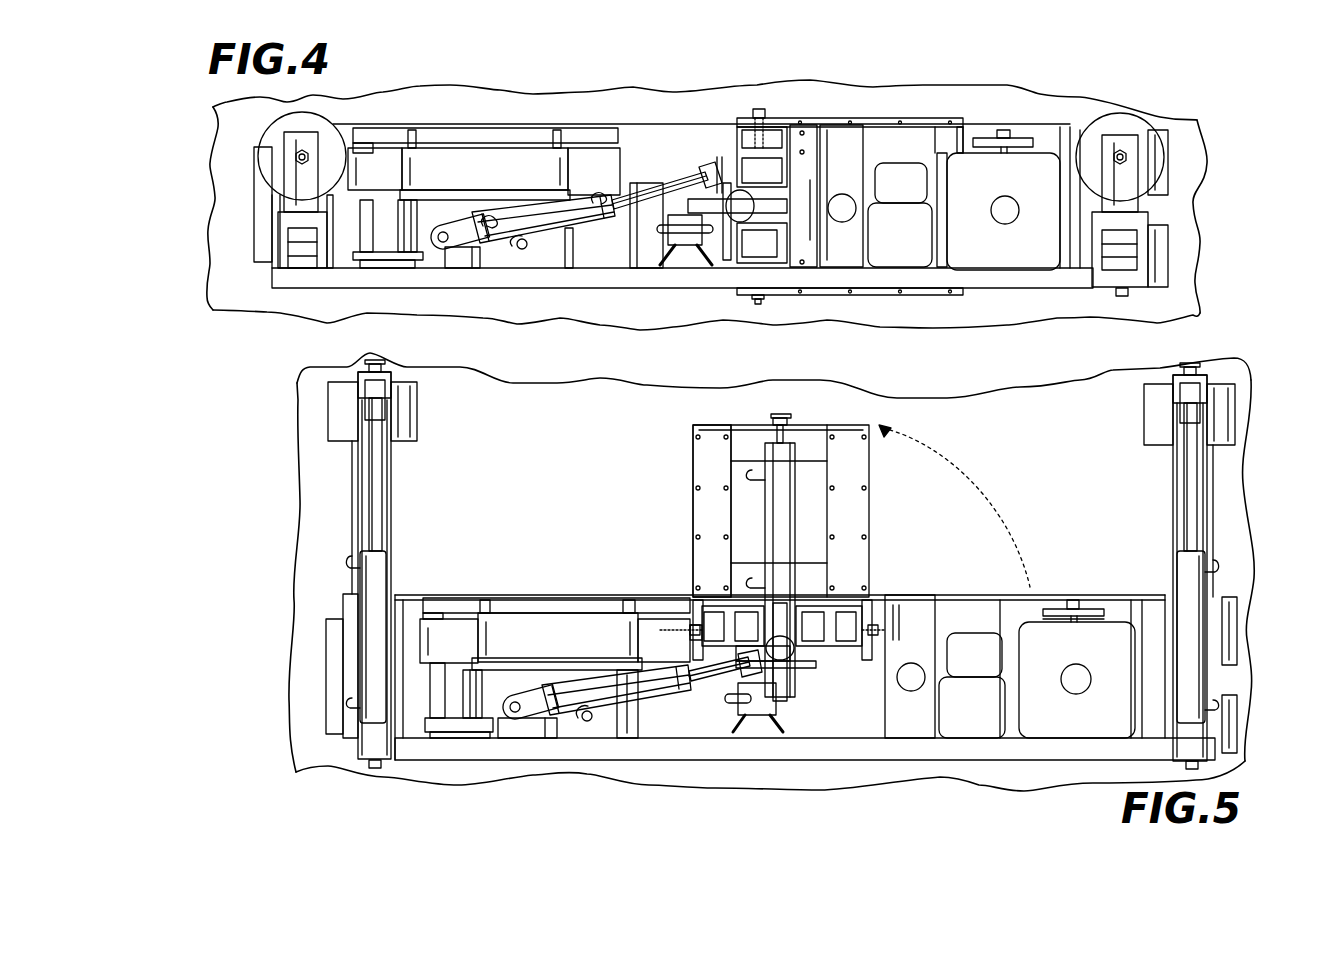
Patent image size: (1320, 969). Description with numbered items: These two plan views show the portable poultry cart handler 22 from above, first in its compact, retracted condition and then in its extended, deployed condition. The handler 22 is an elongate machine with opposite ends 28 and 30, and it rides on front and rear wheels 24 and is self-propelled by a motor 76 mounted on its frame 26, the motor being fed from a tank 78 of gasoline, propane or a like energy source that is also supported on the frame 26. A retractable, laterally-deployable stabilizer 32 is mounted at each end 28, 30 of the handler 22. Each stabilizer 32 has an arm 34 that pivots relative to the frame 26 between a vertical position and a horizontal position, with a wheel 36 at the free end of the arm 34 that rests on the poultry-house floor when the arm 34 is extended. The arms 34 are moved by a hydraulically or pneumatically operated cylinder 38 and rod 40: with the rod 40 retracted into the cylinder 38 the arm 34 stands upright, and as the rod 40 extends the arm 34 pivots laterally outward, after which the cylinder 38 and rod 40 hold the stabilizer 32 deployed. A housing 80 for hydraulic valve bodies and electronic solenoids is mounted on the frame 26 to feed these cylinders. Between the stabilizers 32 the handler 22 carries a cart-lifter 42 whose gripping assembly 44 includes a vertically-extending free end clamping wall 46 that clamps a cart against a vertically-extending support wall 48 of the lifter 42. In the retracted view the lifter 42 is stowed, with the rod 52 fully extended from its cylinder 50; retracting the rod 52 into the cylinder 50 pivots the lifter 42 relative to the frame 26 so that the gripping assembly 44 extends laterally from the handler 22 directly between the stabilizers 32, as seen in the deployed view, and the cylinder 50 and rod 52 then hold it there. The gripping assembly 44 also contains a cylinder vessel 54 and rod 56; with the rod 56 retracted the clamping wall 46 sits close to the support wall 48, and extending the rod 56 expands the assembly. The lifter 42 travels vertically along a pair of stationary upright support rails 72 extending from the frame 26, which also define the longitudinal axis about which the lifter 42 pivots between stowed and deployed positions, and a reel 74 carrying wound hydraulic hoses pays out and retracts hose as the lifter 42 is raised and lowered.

In FIG. 4, the handler 22 is at (1197, 98).
In FIG. 5, the handler 22 is at (247, 417).
In FIG. 4, the front and rear wheels 24 is at (1168, 145).
In FIG. 5, the front and rear wheels 24 is at (1237, 617).
In FIG. 5, the frame 26 is at (612, 752).
In FIG. 4, the end 28 is at (254, 262).
In FIG. 5, the end 28 is at (326, 718).
In FIG. 4, the end 30 is at (1168, 210).
In FIG. 5, the end 30 is at (1240, 690).
In FIG. 4, the stabilizer 32 is at (322, 126).
In FIG. 5, the stabilizer 32 is at (358, 477).
In FIG. 5, the arm 34 is at (358, 504).
In FIG. 4, the wheel 36 is at (268, 145).
In FIG. 5, the wheel 36 is at (328, 412).
In FIG. 5, the cylinder 38 is at (363, 585).
In FIG. 5, the rod 40 is at (370, 528).
In FIG. 5, the cart-lifter 42 is at (866, 603).
In FIG. 4, the gripping assembly 44 is at (912, 122).
In FIG. 5, the gripping assembly 44 is at (869, 527).
In FIG. 4, the free end clamping wall 46 is at (965, 132).
In FIG. 5, the free end clamping wall 46 is at (711, 430).
In FIG. 4, the support wall 48 is at (792, 142).
In FIG. 5, the support wall 48 is at (713, 594).
In FIG. 4, the cylinder 50 is at (556, 243).
In FIG. 5, the cylinder 50 is at (565, 715).
In FIG. 4, the rod 52 is at (657, 172).
In FIG. 5, the rod 52 is at (715, 681).
In FIG. 5, the cylinder vessel 54 is at (770, 517).
In FIG. 5, the rod 56 is at (787, 443).
In FIG. 4, the support rails 72 is at (745, 130).
In FIG. 5, the support rails 72 is at (736, 628).
In FIG. 4, the reel 74 is at (712, 205).
In FIG. 5, the reel 74 is at (791, 690).
In FIG. 4, the motor 76 is at (1020, 262).
In FIG. 5, the motor 76 is at (1053, 735).
In FIG. 4, the tank 78 is at (837, 135).
In FIG. 5, the tank 78 is at (909, 735).
In FIG. 4, the housing 80 is at (472, 150).
In FIG. 5, the housing 80 is at (518, 618).